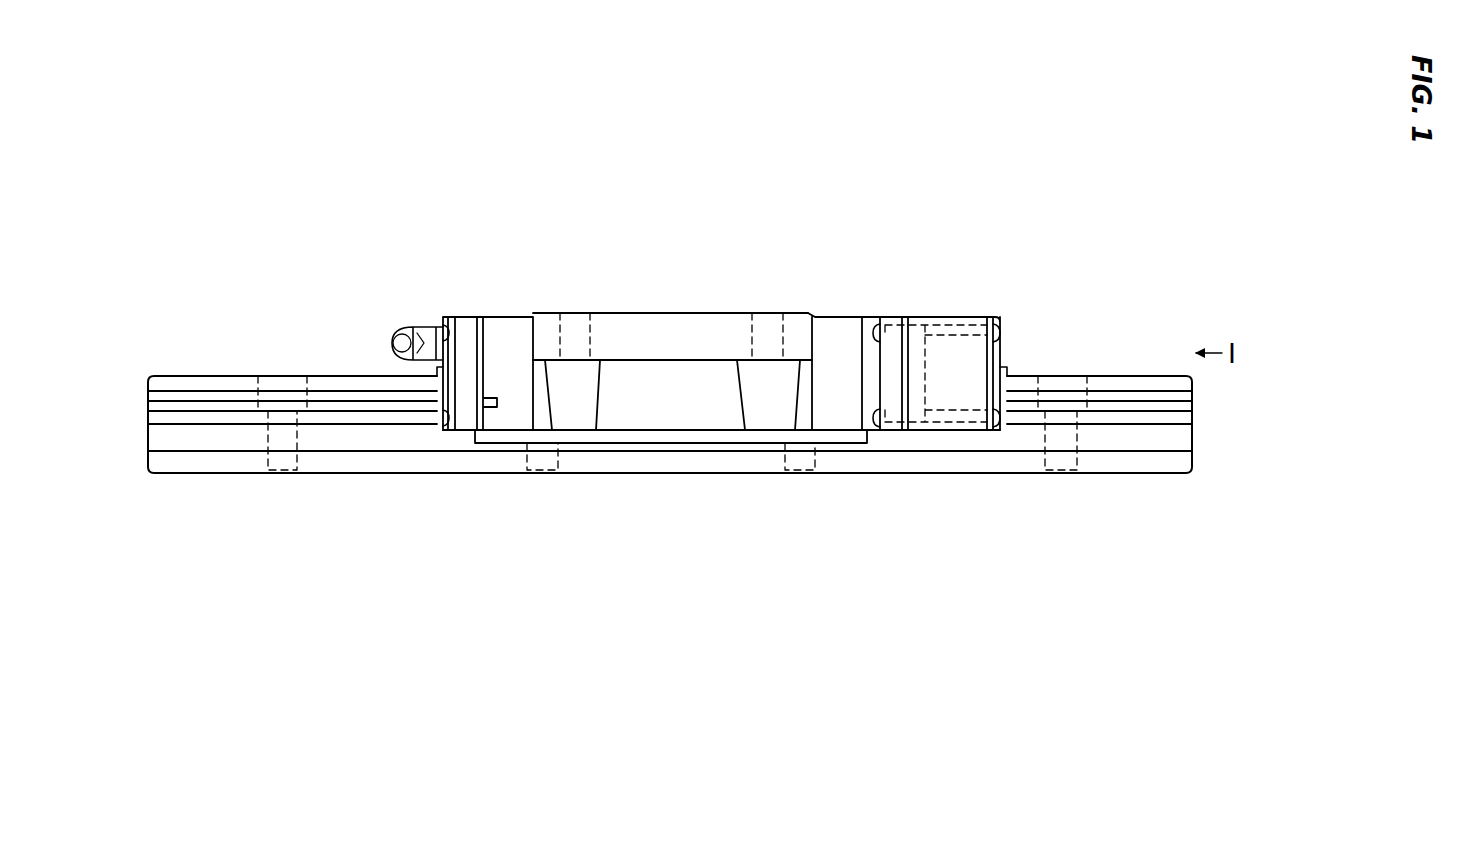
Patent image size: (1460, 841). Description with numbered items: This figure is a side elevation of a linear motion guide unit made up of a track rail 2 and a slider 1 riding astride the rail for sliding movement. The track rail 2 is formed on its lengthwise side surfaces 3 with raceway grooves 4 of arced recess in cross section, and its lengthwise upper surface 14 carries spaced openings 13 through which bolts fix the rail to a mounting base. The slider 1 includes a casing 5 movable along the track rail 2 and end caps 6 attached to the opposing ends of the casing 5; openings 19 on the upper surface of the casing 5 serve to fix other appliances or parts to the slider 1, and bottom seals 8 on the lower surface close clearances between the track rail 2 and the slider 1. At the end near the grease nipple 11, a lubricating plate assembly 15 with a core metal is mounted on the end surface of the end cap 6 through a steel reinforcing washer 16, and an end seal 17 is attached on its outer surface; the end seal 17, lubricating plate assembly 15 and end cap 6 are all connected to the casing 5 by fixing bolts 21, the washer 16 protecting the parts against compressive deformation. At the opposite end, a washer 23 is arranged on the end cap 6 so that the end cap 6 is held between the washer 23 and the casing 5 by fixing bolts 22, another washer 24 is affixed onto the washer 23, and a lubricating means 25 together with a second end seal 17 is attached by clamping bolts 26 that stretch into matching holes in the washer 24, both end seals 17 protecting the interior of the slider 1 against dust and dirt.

The slider 1 is at (712, 312).
The track rail 2 is at (212, 385).
The lengthwise side surface 3 is at (375, 440).
The raceway groove 4 is at (347, 400).
The casing 5 is at (658, 340).
The end cap 6 is at (512, 350).
The bottom seal 8 is at (668, 443).
The grease nipple 11 is at (405, 340).
The opening 13 is at (282, 470).
The lengthwise upper surface 14 is at (253, 385).
The lubricating plate assembly 15 is at (468, 340).
The reinforcing washer 16 is at (493, 343).
The end seal 17 is at (452, 320).
The opening 19 is at (565, 335).
The fixing bolt 21 is at (445, 328).
The fixing bolt 22 is at (875, 330).
The washer 23 is at (868, 375).
The washer 24 is at (893, 383).
The lubricating means 25 is at (957, 315).
The clamping bolt 26 is at (998, 330).